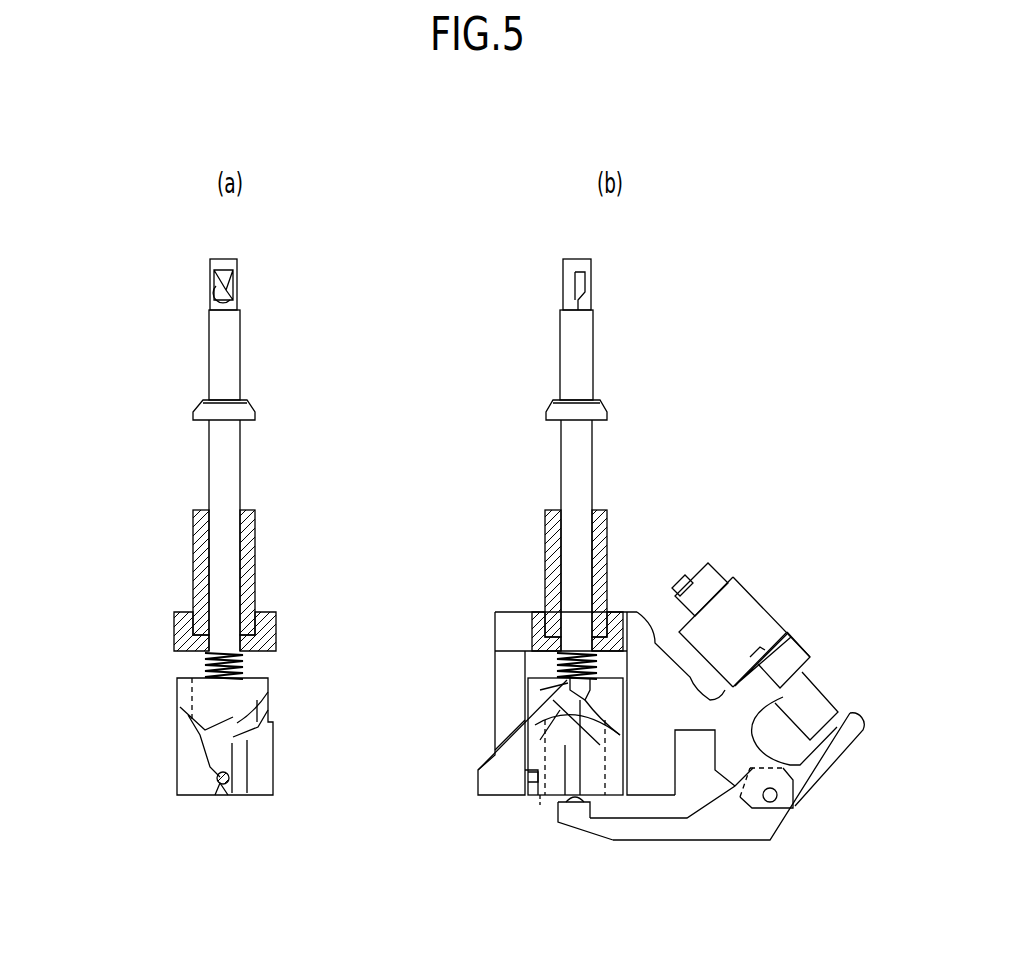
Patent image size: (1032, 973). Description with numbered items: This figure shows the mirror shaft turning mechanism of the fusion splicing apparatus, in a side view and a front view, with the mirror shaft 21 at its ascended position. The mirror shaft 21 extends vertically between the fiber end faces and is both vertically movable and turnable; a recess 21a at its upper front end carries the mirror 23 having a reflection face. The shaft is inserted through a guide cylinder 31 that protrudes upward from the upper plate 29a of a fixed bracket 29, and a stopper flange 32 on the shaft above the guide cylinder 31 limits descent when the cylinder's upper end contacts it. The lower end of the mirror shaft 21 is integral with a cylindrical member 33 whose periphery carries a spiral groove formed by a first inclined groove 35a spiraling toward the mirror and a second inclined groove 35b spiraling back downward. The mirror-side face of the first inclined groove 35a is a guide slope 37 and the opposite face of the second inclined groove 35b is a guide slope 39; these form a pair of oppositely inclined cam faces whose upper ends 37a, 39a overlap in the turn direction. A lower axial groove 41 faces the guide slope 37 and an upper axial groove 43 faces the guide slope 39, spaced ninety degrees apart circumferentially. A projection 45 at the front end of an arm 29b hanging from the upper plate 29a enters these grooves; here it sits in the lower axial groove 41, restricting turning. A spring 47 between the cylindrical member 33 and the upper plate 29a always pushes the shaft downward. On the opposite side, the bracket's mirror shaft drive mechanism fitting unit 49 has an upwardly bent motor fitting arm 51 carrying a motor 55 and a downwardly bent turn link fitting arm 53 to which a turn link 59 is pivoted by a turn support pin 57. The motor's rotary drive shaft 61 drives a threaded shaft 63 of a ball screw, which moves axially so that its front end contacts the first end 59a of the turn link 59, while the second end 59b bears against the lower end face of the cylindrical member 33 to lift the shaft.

The mirror shaft 21 is at (213, 356).
The recess 21a is at (212, 283).
The mirror 23 is at (218, 298).
The stopper flange 32 is at (195, 416).
The guide cylinder 31 is at (193, 543).
The fixed bracket 29 is at (486, 665).
The upper plate 29a is at (178, 629).
The arm 29b is at (497, 745).
The spring 47 is at (205, 666).
The cylindrical member 33 is at (180, 750).
The first inclined groove 35a is at (245, 796).
The second inclined groove 35b is at (528, 723).
The guide slope 37 is at (188, 715).
The upper end of guide slope 37a is at (560, 688).
The guide slope 39 is at (595, 803).
The upper end of guide slope 39a is at (525, 786).
The lower axial groove 41 is at (222, 800).
The upper axial groove 43 is at (268, 690).
The projection 45 is at (216, 782).
The mirror shaft drive mechanism fitting unit 49 is at (655, 668).
The motor fitting arm 51 is at (808, 649).
The turn link fitting arm 53 is at (725, 812).
The motor 55 is at (742, 592).
The turn support pin 57 is at (770, 803).
The turn link 59 is at (692, 842).
The first end of turn link 59a is at (842, 733).
The second end of turn link 59b is at (572, 823).
The rotary drive shaft 61 is at (690, 582).
The threaded shaft 63 is at (814, 700).